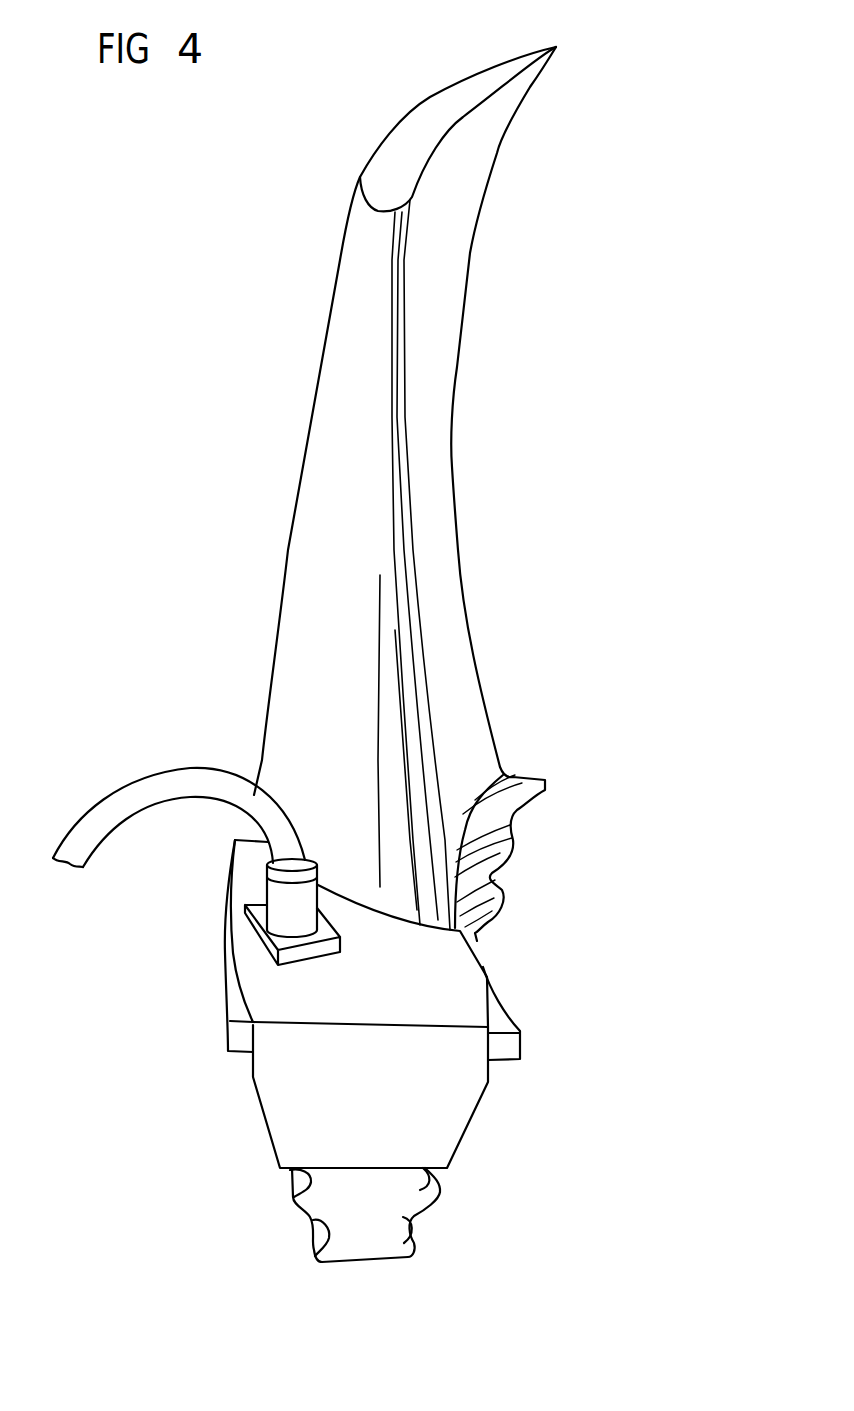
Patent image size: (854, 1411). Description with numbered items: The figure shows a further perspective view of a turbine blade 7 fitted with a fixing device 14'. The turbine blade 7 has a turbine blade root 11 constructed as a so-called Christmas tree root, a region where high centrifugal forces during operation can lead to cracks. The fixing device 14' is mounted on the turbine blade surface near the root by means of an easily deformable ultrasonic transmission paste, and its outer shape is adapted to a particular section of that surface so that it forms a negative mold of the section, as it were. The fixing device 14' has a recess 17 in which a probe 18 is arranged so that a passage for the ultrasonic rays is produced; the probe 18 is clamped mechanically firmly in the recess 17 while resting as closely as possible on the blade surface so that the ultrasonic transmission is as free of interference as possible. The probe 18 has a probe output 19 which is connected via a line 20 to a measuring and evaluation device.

The turbine blade 7 is at (652, 102).
The turbine blade root 11 is at (572, 1033).
The fixing device 14' is at (316, 1096).
The recess 17 is at (256, 953).
The probe 18 is at (280, 913).
The probe output 19 is at (270, 864).
The line 20 is at (122, 805).